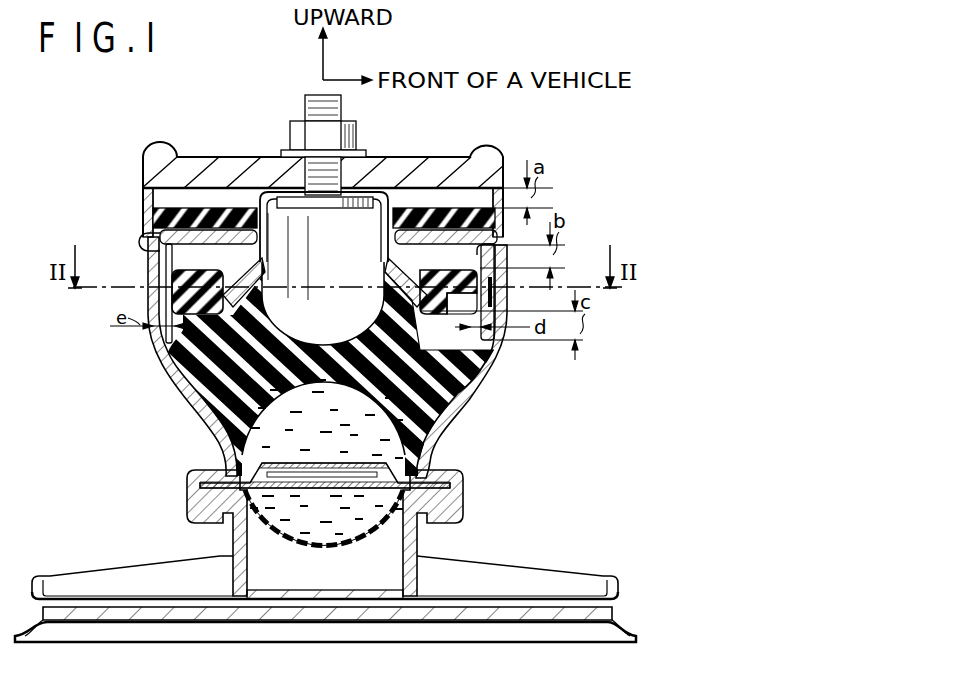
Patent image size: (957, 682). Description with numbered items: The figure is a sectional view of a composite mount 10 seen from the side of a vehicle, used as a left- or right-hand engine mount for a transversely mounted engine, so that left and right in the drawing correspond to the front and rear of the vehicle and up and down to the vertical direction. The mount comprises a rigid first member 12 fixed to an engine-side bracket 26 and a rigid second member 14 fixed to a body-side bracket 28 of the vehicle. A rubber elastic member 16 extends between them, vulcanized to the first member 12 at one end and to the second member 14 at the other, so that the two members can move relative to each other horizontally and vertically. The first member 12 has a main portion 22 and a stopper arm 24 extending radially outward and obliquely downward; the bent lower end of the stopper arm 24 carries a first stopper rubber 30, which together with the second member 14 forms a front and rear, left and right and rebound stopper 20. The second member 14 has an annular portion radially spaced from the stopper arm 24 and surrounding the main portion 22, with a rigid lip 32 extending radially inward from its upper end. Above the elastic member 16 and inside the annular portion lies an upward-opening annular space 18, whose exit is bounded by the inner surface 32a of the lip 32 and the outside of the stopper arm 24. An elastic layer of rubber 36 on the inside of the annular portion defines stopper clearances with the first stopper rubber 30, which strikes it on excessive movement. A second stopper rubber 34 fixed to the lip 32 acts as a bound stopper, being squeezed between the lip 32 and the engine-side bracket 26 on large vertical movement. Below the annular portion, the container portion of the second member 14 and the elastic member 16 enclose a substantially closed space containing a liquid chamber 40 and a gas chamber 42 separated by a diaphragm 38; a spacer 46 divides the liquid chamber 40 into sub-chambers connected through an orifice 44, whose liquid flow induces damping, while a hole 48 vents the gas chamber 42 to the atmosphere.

The composite mount 10 is at (180, 405).
The first member 12 is at (298, 262).
The second member 14 is at (466, 373).
The elastic member 16 is at (462, 392).
The space 18 is at (440, 230).
The stopper 20 is at (143, 250).
The main portion 22 is at (357, 213).
The stopper arm 24 is at (413, 262).
The engine-side bracket 26 is at (498, 172).
The body-side bracket 28 is at (537, 580).
The first stopper rubber 30 is at (440, 188).
The lip 32 is at (147, 235).
The inner surface of lip 32a is at (183, 215).
The second stopper rubber 34 is at (213, 210).
The elastic layer of rubber 36 is at (153, 268).
The diaphragm 38 is at (290, 548).
The liquid chamber 40 is at (357, 418).
The gas chamber 42 is at (380, 550).
The orifice 44 is at (408, 483).
The spacer 46 is at (362, 466).
The hole 48 is at (233, 567).